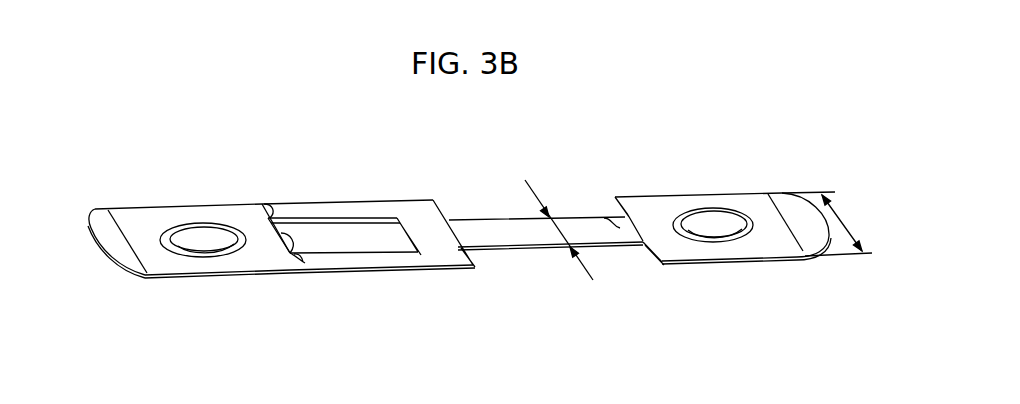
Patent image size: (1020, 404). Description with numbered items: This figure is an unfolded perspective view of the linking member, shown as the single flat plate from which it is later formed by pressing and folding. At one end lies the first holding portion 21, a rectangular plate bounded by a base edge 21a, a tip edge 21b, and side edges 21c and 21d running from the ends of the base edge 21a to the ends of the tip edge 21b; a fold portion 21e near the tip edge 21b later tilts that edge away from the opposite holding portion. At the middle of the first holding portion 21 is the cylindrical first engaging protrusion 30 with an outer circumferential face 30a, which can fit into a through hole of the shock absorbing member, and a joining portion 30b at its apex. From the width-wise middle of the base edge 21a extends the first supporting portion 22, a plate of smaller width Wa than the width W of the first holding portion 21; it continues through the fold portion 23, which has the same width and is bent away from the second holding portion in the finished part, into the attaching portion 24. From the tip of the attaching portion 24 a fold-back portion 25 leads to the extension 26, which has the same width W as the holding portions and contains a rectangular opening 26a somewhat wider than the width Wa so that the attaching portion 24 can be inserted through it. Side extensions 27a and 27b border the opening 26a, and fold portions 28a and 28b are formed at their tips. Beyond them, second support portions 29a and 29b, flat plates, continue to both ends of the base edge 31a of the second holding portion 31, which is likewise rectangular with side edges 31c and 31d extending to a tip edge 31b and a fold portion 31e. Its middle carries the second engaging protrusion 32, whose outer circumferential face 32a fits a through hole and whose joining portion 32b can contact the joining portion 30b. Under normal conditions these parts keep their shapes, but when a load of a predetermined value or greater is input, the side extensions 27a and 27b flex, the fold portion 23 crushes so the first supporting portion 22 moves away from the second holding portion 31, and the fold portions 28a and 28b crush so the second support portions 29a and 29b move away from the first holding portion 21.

The first holding portion 21 is at (710, 236).
The base edge 21a is at (615, 198).
The tip edge 21b is at (814, 208).
The side edge 21c is at (652, 197).
The side edge 21d is at (664, 262).
The fold portion 21e is at (775, 206).
The first supporting portion 22 is at (636, 230).
The fold portion 23 is at (604, 218).
The attaching portion 24 is at (505, 234).
The fold-back portion 25 is at (458, 226).
The extension 26 is at (370, 238).
The opening 26a is at (387, 237).
The side extension 27a is at (347, 185).
The side extension 27b is at (382, 298).
The fold portion 28a is at (272, 217).
The fold portion 28b is at (304, 262).
The second support portion 29a is at (263, 203).
The second support portion 29b is at (292, 258).
The first engaging protrusion 30 is at (725, 275).
The outer circumferential face 30a is at (697, 234).
The joining portion 30b is at (722, 228).
The second holding portion 31 is at (166, 231).
The base edge 31a is at (288, 256).
The tip edge 31b is at (100, 250).
The side edge 31c is at (160, 203).
The side edge 31d is at (200, 274).
The fold portion 31e is at (126, 226).
The second engaging protrusion 32 is at (208, 191).
The outer circumferential face 32a is at (238, 237).
The joining portion 32b is at (253, 160).
The width of first holding portion W is at (827, 224).
The width of first supporting portion Wa is at (561, 242).